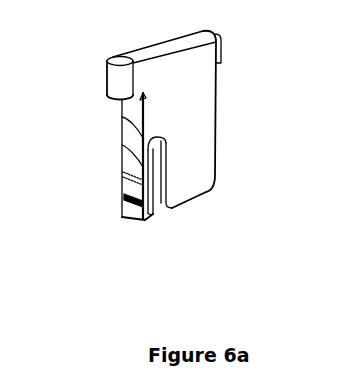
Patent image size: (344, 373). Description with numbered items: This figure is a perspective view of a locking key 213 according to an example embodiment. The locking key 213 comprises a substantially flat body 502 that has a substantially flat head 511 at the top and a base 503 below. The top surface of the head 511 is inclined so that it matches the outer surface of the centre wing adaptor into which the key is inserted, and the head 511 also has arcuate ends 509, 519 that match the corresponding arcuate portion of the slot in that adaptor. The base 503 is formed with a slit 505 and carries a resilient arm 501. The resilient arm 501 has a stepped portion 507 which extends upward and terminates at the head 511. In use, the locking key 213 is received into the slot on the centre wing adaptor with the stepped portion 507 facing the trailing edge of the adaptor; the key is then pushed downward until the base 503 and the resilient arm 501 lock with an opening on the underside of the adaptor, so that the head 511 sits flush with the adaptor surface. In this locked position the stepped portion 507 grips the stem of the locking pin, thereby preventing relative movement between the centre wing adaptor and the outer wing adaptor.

The locking key 213 is at (108, 242).
The resilient arm 501 is at (152, 252).
The substantially flat body 502 is at (187, 154).
The base 503 is at (203, 213).
The slit 505 is at (162, 240).
The stepped portion 507 is at (133, 240).
The arcuate end 509 is at (108, 112).
The substantially flat head 511 is at (140, 95).
The arcuate end 519 is at (217, 84).